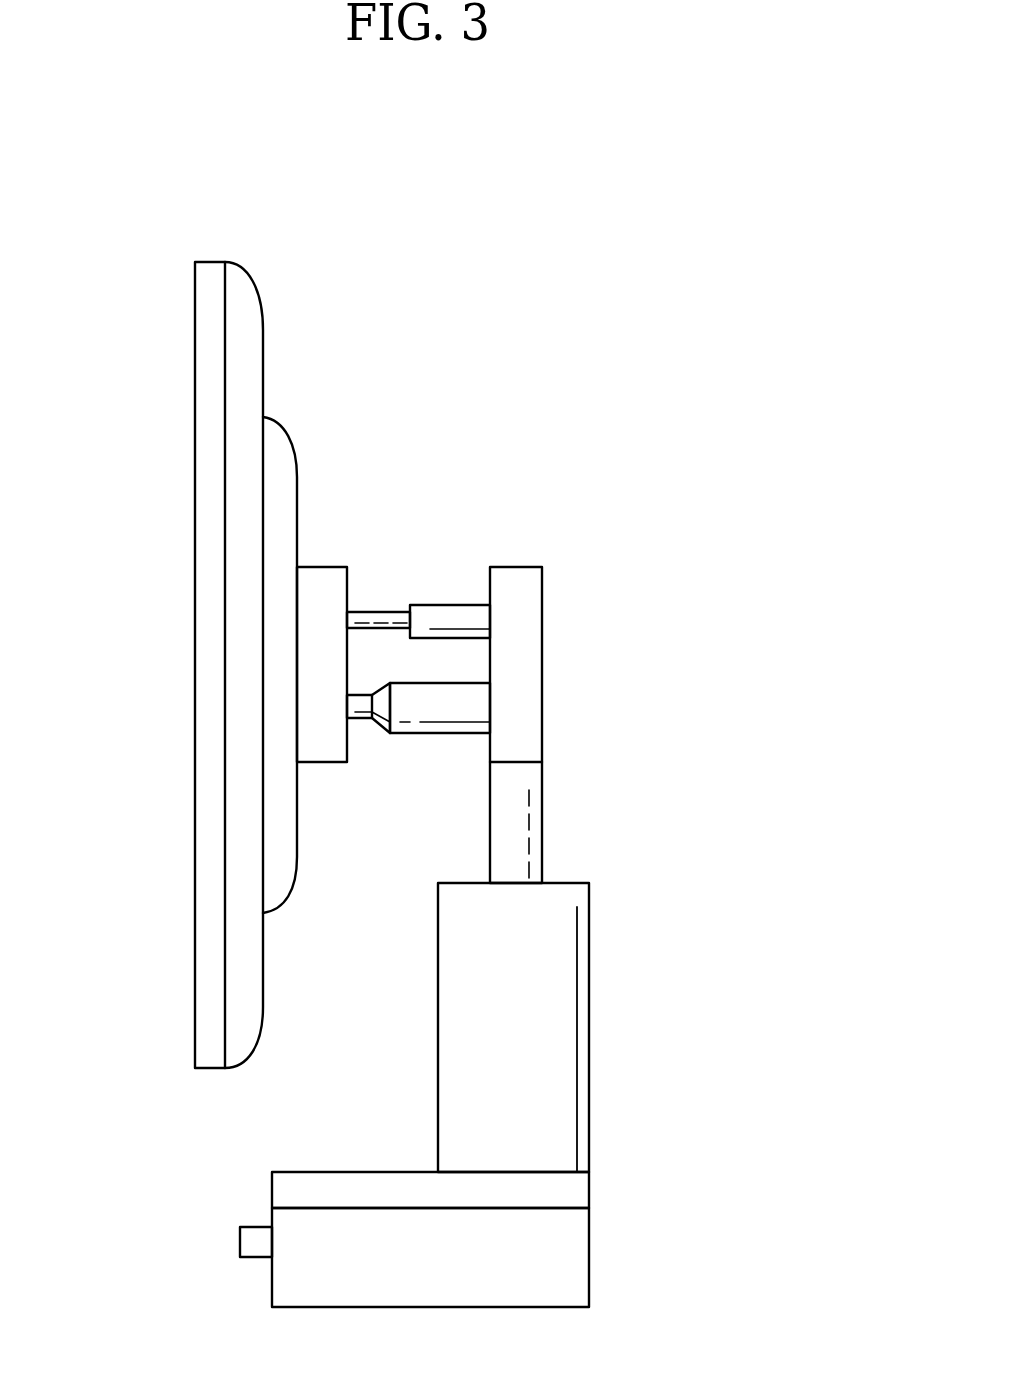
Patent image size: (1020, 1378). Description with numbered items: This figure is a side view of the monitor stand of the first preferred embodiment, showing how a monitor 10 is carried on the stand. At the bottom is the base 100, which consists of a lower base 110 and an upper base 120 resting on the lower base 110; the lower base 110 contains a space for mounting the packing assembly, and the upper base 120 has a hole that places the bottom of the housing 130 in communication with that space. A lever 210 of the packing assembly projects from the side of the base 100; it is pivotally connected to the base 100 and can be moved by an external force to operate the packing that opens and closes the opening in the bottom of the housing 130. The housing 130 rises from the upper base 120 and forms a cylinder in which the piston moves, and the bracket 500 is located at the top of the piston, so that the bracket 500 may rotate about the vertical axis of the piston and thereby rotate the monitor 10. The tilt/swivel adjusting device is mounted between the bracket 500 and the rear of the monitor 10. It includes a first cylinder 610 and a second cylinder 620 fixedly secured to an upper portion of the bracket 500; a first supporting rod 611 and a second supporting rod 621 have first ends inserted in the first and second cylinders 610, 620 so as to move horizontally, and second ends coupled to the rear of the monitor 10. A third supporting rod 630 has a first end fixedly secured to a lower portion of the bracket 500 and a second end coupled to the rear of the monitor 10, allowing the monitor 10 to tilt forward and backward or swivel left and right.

The monitor 10 is at (196, 368).
The base 100 is at (529, 1232).
The lower base 110 is at (573, 1258).
The upper base 120 is at (573, 1195).
The housing 130 is at (573, 1032).
The lever 210 is at (252, 1242).
The bracket 500 is at (527, 612).
The first cylinder 610 is at (448, 572).
The second cylinder 620 is at (445, 605).
The first supporting rod 611 is at (372, 538).
The second supporting rod 621 is at (383, 612).
The third supporting rod 630 is at (458, 692).